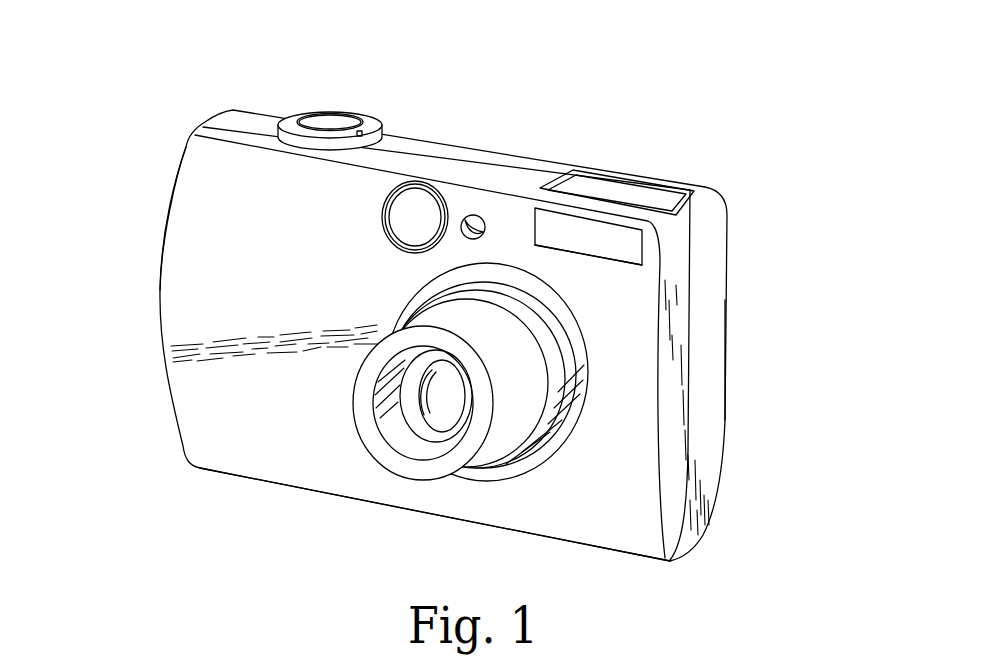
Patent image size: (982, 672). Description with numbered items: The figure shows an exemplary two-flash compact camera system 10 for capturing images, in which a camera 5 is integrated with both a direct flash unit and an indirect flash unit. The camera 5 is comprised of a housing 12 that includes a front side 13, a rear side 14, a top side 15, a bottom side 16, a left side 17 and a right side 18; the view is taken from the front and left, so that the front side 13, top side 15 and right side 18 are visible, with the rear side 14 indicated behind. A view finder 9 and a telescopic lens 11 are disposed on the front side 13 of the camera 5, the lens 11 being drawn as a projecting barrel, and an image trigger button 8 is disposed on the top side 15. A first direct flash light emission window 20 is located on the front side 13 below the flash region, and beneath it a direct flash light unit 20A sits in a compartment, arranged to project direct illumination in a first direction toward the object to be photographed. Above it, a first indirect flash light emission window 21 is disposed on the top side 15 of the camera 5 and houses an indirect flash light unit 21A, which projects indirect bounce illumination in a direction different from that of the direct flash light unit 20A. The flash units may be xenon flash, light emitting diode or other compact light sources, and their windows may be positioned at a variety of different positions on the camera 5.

The two-flash compact camera system 10 is at (538, 92).
The camera 5 is at (183, 153).
The top side 15 is at (253, 117).
The image trigger button 8 is at (325, 118).
The view finder 9 is at (403, 183).
The first indirect flash light emission window 21 is at (650, 195).
The indirect flash light unit 21A is at (607, 183).
The direct flash light emission window 20 is at (623, 237).
The direct flash light unit 20A is at (632, 260).
The right side 18 is at (712, 365).
The rear side 14 is at (745, 463).
The left side 17 is at (162, 290).
The housing 12 is at (188, 408).
The front side 13 is at (247, 447).
The telescopic lens 11 is at (370, 432).
The bottom side 16 is at (408, 512).